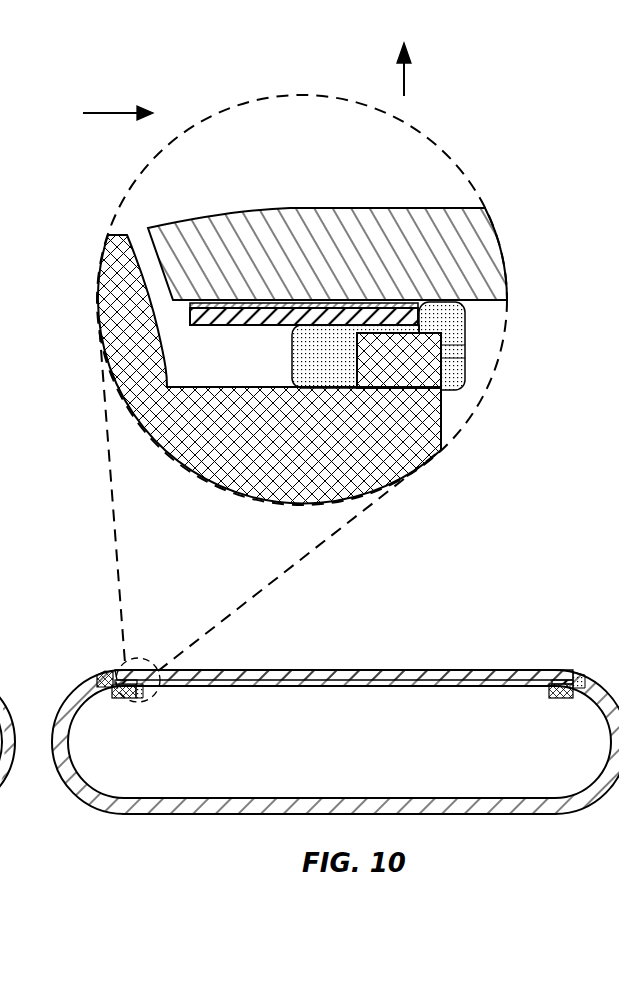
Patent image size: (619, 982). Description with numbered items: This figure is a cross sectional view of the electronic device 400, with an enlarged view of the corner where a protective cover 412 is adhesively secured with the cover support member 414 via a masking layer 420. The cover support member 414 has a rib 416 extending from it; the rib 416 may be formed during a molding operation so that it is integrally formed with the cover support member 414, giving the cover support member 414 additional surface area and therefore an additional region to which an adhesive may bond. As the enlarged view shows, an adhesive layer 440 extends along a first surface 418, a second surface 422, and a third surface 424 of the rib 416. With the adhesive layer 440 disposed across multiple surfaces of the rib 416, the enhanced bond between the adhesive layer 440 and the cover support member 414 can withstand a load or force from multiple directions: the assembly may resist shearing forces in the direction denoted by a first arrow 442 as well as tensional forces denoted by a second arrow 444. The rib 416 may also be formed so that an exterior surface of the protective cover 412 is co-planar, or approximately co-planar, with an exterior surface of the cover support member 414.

The electronic device 400 is at (505, 601).
The protective cover 412 is at (334, 261).
The cover support member 414 is at (297, 448).
The rib 416 is at (409, 376).
The first surface 418 is at (357, 349).
The masking layer 420 is at (230, 325).
The second surface 422 is at (430, 357).
The third surface 424 is at (423, 350).
The adhesive layer 440 is at (465, 331).
The first arrow 442 is at (100, 113).
The second arrow 444 is at (405, 87).